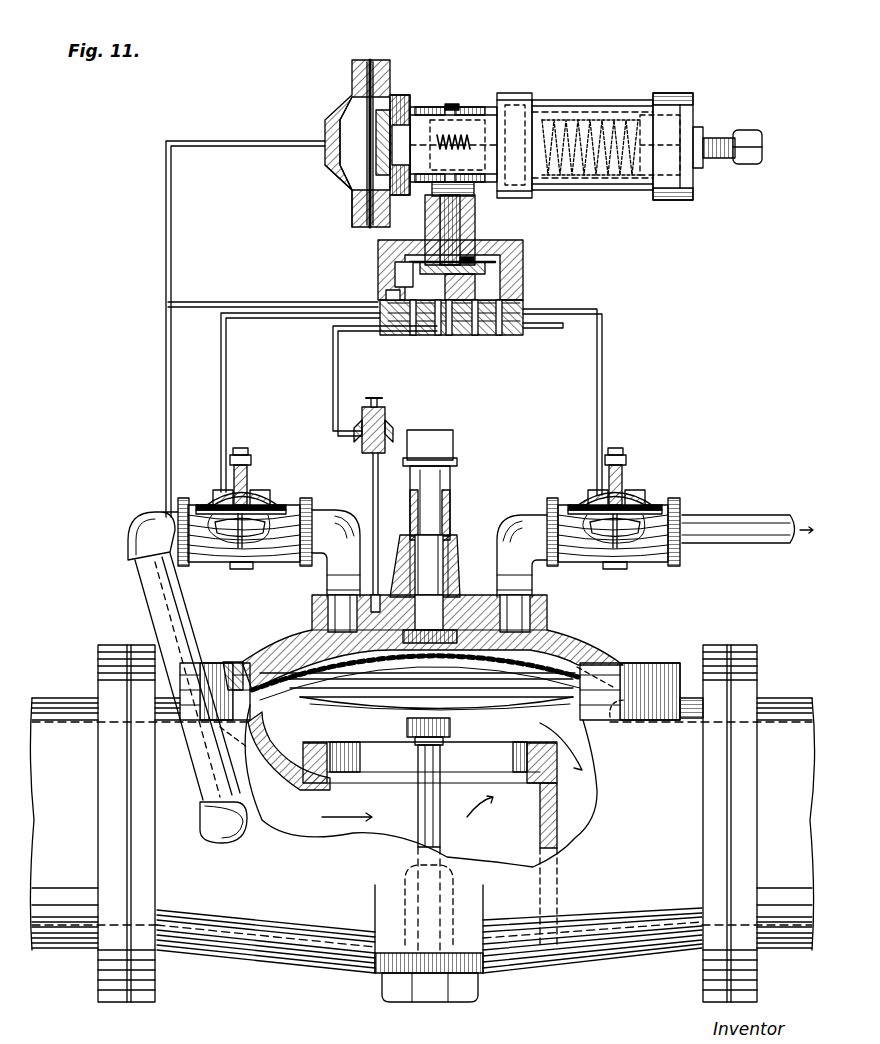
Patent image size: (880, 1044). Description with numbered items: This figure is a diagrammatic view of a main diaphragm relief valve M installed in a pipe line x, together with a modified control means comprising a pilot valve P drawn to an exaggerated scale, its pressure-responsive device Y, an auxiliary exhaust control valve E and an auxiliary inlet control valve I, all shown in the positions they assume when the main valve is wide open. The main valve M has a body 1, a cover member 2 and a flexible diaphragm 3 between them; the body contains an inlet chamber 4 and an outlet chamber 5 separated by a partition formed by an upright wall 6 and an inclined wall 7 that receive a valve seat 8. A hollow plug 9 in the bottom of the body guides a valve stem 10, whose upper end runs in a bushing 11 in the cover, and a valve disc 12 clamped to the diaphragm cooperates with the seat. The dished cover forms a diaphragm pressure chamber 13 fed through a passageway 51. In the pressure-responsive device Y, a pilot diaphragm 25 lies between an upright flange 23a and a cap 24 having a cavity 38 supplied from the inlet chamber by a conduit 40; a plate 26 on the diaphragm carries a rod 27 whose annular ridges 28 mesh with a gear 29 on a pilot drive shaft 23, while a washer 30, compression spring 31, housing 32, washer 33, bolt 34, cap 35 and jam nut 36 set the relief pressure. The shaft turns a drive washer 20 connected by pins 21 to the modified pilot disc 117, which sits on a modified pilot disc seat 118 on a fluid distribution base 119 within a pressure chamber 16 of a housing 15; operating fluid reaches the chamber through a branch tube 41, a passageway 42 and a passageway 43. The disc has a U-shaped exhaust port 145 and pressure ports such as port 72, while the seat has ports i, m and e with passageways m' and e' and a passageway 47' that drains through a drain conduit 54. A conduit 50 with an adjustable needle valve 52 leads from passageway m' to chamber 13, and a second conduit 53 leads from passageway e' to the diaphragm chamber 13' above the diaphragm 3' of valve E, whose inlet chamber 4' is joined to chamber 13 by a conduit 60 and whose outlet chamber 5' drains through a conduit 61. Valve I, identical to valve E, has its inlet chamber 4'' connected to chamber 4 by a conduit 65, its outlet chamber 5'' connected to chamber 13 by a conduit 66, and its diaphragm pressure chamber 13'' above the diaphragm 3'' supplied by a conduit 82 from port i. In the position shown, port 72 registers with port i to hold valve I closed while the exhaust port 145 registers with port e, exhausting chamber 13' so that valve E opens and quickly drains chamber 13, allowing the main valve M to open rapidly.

The body 1 is at (622, 950).
The cover member 2 is at (628, 666).
The flexible diaphragm 3 is at (691, 673).
The inlet chamber 4 is at (256, 977).
The outlet chamber 5 is at (565, 977).
The upright wall 6 is at (558, 800).
The inclined wall 7 is at (278, 762).
The valve seat 8 is at (316, 748).
The hollow plug 9 is at (426, 1002).
The valve stem 10 is at (440, 833).
The bushing 11 is at (470, 578).
The valve disc 12 is at (445, 714).
The diaphragm pressure chamber 13 is at (423, 642).
The passageway 51 is at (395, 650).
The pipe line x is at (48, 700).
The main valve M is at (200, 958).
The housing 15 is at (378, 244).
The pressure chamber 16 is at (475, 258).
The drive washer 20 is at (470, 258).
The pins 21 is at (433, 238).
The pilot drive shaft 23 is at (455, 108).
The upright flange 23a is at (395, 75).
The cap 24 is at (352, 72).
The pilot diaphragm 25 is at (370, 60).
The plate 26 is at (352, 143).
The rod 27 is at (430, 115).
The annular ridges 28 is at (505, 92).
The gear 29 is at (430, 196).
The washer 30 is at (545, 100).
The compression spring 31 is at (580, 118).
The housing 32 is at (620, 190).
The washer 33 is at (643, 115).
The bolt 34 is at (752, 140).
The cap 35 is at (680, 93).
The jam nut 36 is at (700, 127).
The cavity 38 is at (340, 180).
The conduit 40 is at (232, 140).
The branch tube 41 is at (205, 300).
The passageway 42 is at (384, 296).
The passageway 43 is at (392, 280).
The passageway 47' is at (475, 354).
The conduit 50 is at (332, 385).
The adjustable needle valve 52 is at (386, 420).
The second conduit 53 is at (602, 376).
The drain conduit 54 is at (552, 328).
The conduit 60 is at (520, 572).
The conduit 61 is at (728, 522).
The conduit 65 is at (145, 585).
The conduit 66 is at (332, 520).
The pressure port 72 is at (378, 258).
The conduit 82 is at (228, 385).
The modified pilot disc 117 is at (524, 243).
The modified pilot disc seat 118 is at (478, 284).
The fluid distribution base 119 is at (525, 300).
The U-shaped exhaust port 145 is at (500, 262).
The pilot valve P is at (525, 243).
The pressure-responsive device Y is at (392, 62).
The auxiliary inlet control valve I is at (245, 510).
The auxiliary exhaust control valve E is at (613, 517).
The diaphragm pressure chamber 13'' is at (241, 473).
The diaphragm 3'' is at (216, 476).
The inlet chamber 4'' is at (245, 543).
The outlet chamber 5'' is at (247, 551).
The diaphragm chamber 13' is at (605, 483).
The diaphragm 3' is at (626, 475).
The inlet chamber 4' is at (613, 543).
The outlet chamber 5' is at (627, 551).
The port i is at (382, 335).
The port m is at (438, 350).
The passageway m' is at (398, 353).
The port e is at (450, 359).
The passageway e' is at (510, 352).